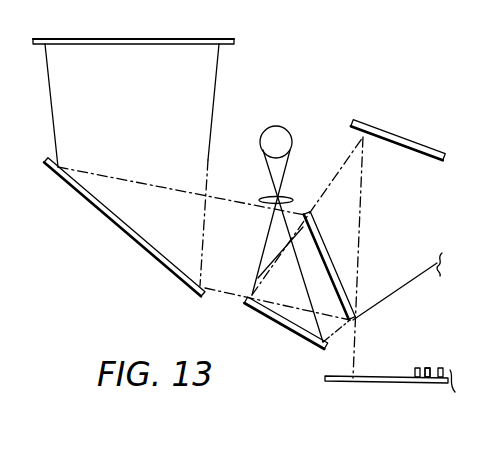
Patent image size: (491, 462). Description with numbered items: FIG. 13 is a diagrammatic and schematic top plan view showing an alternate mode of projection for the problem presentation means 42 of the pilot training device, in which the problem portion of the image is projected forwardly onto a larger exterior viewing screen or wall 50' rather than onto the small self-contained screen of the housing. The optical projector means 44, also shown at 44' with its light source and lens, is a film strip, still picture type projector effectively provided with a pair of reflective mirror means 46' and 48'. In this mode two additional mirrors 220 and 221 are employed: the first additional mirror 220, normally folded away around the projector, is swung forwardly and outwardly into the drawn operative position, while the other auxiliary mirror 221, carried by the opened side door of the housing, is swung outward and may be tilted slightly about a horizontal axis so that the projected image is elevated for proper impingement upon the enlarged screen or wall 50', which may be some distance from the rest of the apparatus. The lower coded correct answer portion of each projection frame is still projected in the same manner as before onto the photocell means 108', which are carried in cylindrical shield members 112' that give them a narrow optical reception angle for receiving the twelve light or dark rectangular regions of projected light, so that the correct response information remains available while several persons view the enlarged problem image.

The enlarged viewing screen or wall 50' is at (244, 214).
The auxiliary mirror 221 is at (140, 240).
The first additional mirror 220 is at (319, 235).
The reflective mirror means 46' is at (285, 328).
The reflective mirror means 48' is at (398, 137).
The optical projector means 44' is at (254, 165).
The optical projector means 44 is at (471, 44).
The problem presentation means 42 is at (98, 302).
The cylindrical shield members 112' is at (415, 360).
The photocell means 108' is at (449, 354).